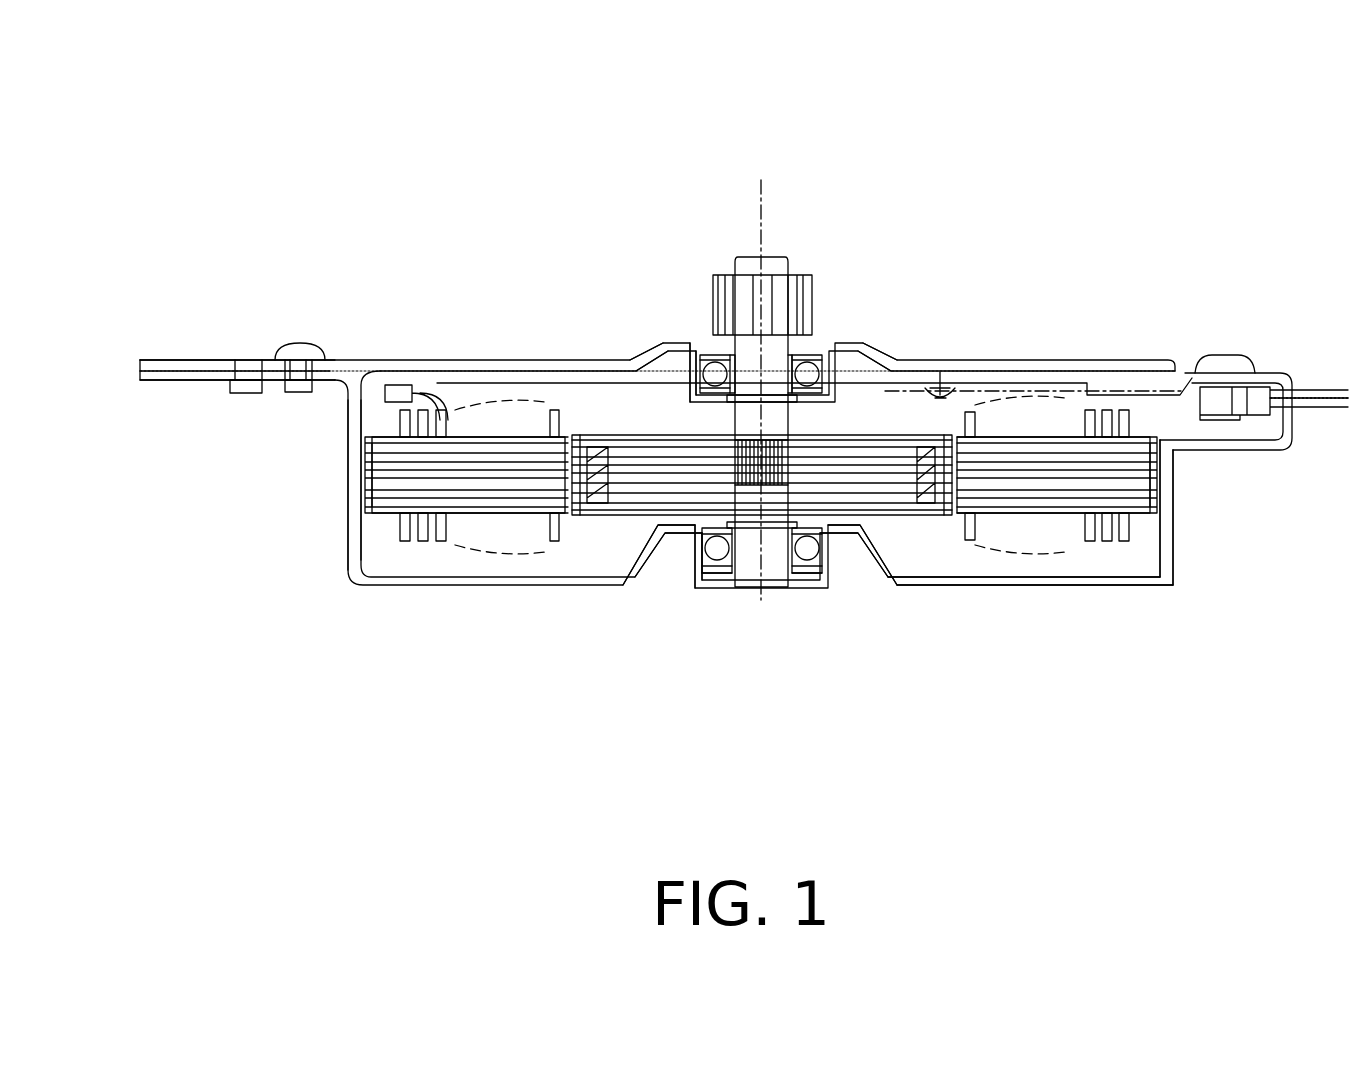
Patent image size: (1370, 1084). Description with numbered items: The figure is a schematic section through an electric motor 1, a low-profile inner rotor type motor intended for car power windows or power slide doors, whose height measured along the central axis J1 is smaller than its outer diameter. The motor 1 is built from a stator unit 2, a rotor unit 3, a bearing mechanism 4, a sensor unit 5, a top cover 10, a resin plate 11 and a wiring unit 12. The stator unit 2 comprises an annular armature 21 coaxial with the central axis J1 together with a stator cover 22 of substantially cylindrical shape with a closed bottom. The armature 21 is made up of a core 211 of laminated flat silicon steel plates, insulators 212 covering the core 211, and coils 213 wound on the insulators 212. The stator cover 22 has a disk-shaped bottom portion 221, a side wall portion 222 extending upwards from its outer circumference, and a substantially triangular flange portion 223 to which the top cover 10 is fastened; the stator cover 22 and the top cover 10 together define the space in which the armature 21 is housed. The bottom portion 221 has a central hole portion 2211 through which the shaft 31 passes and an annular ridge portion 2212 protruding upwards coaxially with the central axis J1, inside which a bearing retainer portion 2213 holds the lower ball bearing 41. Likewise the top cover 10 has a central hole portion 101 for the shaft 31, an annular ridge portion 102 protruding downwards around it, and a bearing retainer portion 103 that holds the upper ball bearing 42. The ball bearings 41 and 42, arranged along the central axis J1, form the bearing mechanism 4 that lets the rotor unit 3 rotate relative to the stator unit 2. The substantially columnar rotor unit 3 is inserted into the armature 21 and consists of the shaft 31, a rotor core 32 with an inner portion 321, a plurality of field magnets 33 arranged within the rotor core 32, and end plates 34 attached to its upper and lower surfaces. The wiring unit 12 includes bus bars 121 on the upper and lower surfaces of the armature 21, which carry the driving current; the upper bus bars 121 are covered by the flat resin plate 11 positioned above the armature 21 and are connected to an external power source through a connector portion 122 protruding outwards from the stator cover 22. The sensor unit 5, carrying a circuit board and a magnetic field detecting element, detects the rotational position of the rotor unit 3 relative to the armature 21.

The electric motor 1 is at (378, 113).
The central axis J1 is at (768, 206).
The stator unit 2 is at (258, 710).
The armature 21 is at (338, 662).
The core 211 is at (460, 492).
The insulators 212 is at (378, 550).
The coils 213 is at (490, 562).
The stator cover 22 is at (352, 540).
The bottom portion 221 is at (1085, 588).
The side wall portion 222 is at (1180, 528).
The flange portion 223 is at (193, 383).
The hole portion 2211 is at (733, 590).
The ridge portion 2212 is at (660, 590).
The bearing retainer portion 2213 is at (870, 590).
The rotor unit 3 is at (532, 688).
The shaft 31 is at (698, 588).
The rotor core 32 is at (607, 665).
The rotor core 321 is at (625, 450).
The field magnets 33 is at (556, 520).
The end plates 34 is at (642, 458).
The bearing mechanism 4 is at (830, 665).
The ball bearing 41 is at (810, 565).
The ball bearing 42 is at (713, 355).
The sensor unit 5 is at (950, 392).
The top cover 10 is at (397, 362).
The resin plate 11 is at (470, 380).
The wiring unit 12 is at (1258, 230).
The hole portion 101 is at (806, 346).
The ridge portion 102 is at (865, 372).
The bearing retainer portion 103 is at (686, 372).
The bus bars 121 is at (1196, 370).
The connector portion 122 is at (1268, 352).